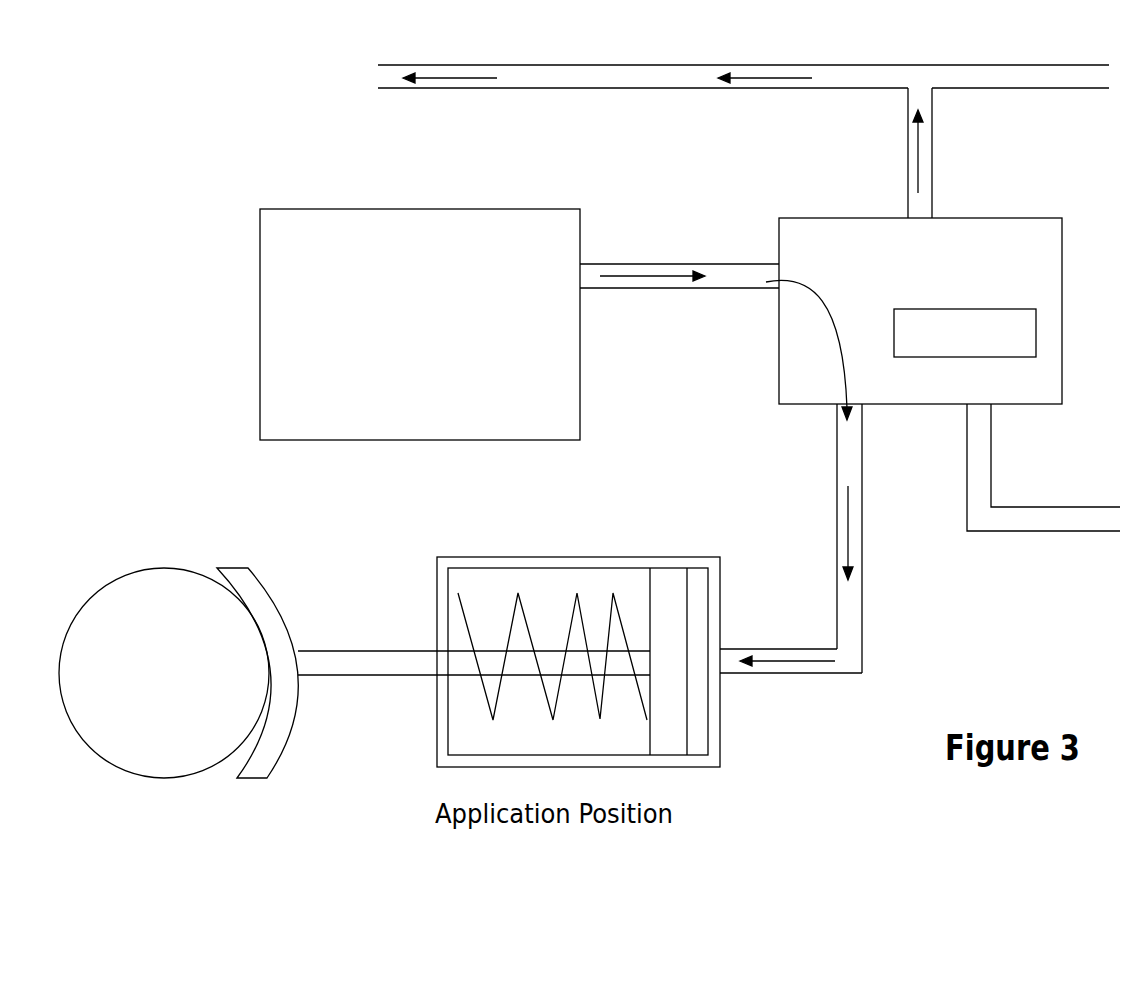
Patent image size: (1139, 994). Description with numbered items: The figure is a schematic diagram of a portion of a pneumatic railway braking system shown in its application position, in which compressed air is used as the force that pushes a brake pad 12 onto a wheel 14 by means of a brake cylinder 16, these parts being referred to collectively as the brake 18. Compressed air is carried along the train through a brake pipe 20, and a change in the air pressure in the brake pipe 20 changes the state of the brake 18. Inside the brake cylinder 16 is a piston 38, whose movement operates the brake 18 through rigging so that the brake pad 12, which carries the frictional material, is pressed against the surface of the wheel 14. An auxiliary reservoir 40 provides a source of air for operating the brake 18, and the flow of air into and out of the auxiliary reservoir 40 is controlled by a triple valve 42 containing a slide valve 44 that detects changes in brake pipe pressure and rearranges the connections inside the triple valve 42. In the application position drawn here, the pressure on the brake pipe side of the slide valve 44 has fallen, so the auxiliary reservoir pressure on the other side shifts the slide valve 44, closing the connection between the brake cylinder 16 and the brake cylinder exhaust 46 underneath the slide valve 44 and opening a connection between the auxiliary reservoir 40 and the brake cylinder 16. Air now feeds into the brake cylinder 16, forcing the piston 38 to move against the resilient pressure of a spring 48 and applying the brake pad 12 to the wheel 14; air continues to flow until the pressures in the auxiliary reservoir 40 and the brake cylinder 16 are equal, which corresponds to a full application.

The brake pad 12 is at (272, 755).
The wheel 14 is at (117, 578).
The brake cylinder 16 is at (718, 706).
The brake 18 is at (728, 811).
The brake pipe 20 is at (860, 65).
The piston 38 is at (340, 650).
The auxiliary reservoir 40 is at (271, 372).
The triple valve 42 is at (1062, 252).
The slide valve 44 is at (1036, 345).
The brake cylinder exhaust 46 is at (1036, 516).
The spring 48 is at (530, 625).